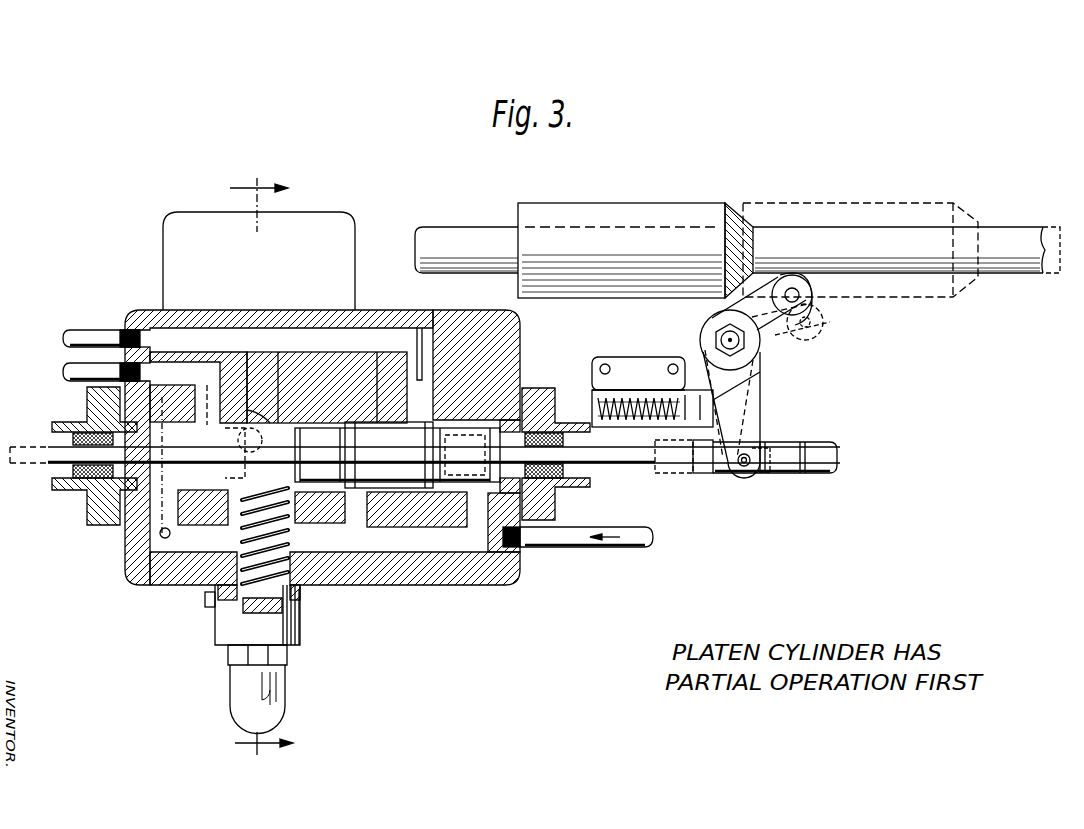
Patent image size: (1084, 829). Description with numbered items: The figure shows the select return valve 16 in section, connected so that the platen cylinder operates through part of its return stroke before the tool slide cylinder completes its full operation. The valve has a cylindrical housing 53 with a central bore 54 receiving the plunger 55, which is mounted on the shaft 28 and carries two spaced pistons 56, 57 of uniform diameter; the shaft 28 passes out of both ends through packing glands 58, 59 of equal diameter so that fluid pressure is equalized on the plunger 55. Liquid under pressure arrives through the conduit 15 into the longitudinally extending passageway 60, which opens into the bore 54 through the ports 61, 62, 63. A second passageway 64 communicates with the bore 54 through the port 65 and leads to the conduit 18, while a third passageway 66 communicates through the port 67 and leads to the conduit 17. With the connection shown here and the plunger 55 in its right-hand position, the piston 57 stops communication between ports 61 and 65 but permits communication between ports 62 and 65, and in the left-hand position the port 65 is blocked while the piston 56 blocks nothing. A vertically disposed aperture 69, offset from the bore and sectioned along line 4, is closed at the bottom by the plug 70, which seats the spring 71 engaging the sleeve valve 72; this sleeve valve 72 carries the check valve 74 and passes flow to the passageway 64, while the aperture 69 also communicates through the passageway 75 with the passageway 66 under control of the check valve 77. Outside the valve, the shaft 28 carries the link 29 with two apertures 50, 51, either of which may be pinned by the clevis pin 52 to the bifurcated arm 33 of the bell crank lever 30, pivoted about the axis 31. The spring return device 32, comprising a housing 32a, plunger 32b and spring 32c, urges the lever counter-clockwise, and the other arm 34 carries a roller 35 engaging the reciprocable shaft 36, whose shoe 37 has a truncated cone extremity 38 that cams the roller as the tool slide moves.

The section line 4 is at (261, 468).
The conduit 15 is at (633, 549).
The select return valve 16 is at (400, 578).
The conduit 17 is at (70, 370).
The conduit 18 is at (85, 331).
The shaft 28 is at (57, 462).
The link 29 is at (838, 462).
The bell crank lever 30 is at (790, 335).
The axis 31 is at (715, 345).
The spring return device 32 is at (605, 364).
The housing 32a is at (592, 380).
The plunger 32b is at (713, 398).
The spring 32c is at (624, 405).
The arm 33 is at (750, 395).
The arm 34 is at (810, 322).
The roller 35 is at (815, 305).
The reciprocable shaft 36 is at (910, 228).
The shoe 37 is at (638, 208).
The truncated cone extremity 38 is at (740, 205).
The aperture 50 is at (803, 443).
The aperture 51 is at (744, 468).
The clevis pin 52 is at (762, 470).
The cylindrical housing 53 is at (492, 575).
The central bore 54 is at (377, 356).
The plunger 55 is at (405, 445).
The piston 56 is at (357, 527).
The piston 57 is at (472, 427).
The packing gland 58 is at (534, 395).
The packing gland 59 is at (85, 416).
The longitudinally extending passageway 60 is at (345, 568).
The port 61 is at (505, 556).
The port 62 is at (356, 520).
The port 63 is at (122, 538).
The longitudinally extending passageway 64 is at (345, 342).
The port 65 is at (420, 378).
The longitudinally extending passageway 66 is at (160, 335).
The port 67 is at (207, 385).
The aperture 69 is at (262, 337).
The plug 70 is at (297, 633).
The spring 71 is at (280, 535).
The sleeve valve 72 is at (310, 400).
The check valve 74 is at (238, 438).
The passageway 75 is at (235, 478).
The check valve 77 is at (92, 402).